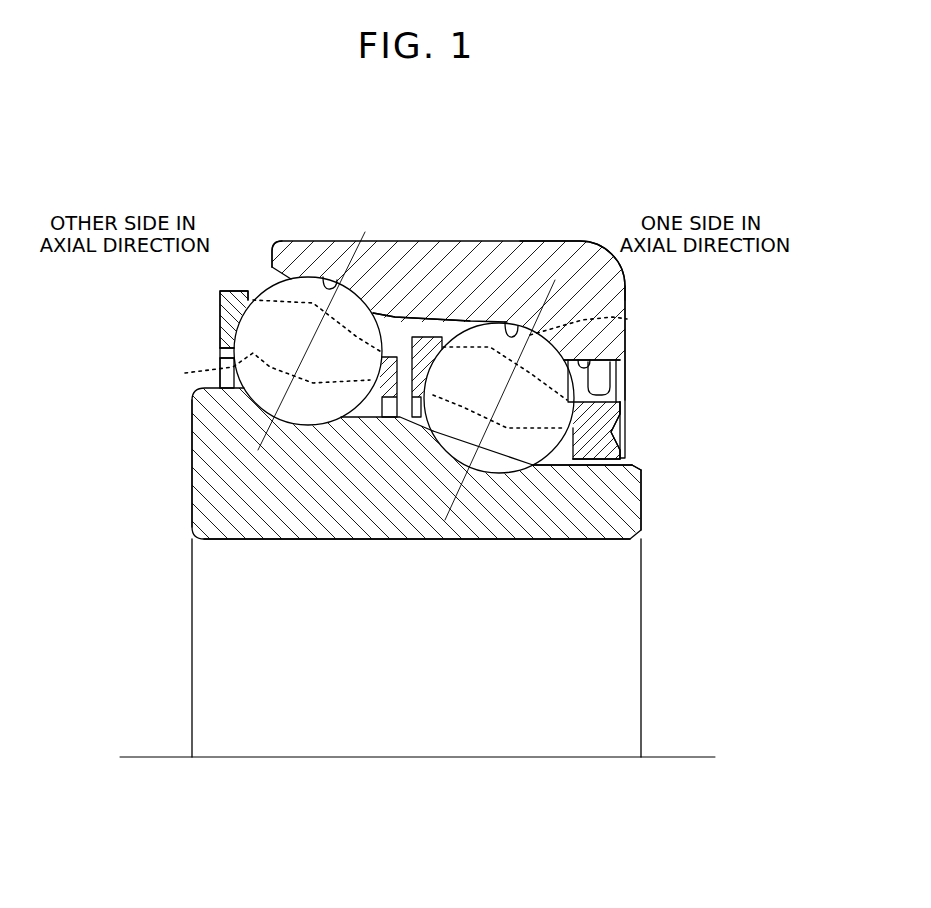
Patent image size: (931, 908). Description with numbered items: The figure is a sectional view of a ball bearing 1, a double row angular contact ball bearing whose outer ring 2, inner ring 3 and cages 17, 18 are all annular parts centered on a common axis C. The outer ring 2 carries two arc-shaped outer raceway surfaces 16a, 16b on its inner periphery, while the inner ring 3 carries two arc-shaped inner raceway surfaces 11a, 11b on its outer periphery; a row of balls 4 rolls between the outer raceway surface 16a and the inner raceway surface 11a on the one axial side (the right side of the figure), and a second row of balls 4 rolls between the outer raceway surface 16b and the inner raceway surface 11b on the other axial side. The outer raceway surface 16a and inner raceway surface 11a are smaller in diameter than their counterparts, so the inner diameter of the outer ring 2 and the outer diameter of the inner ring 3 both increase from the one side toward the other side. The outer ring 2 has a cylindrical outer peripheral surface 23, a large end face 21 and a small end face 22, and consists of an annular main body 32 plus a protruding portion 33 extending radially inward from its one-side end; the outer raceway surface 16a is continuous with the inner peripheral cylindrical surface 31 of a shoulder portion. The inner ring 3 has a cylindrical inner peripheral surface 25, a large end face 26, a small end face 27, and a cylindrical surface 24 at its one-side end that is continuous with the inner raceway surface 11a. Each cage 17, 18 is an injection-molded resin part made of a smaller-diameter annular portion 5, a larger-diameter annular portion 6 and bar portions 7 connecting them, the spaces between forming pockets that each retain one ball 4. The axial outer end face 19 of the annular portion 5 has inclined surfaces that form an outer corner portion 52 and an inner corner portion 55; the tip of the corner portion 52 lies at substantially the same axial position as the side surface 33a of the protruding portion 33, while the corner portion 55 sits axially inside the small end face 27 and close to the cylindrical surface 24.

The ball bearing 1 is at (541, 170).
The outer ring 2 is at (458, 238).
The inner ring 3 is at (535, 545).
The balls 4 is at (222, 362).
The annular portion with a smaller diameter 5 is at (620, 452).
The annular portion with a larger diameter 6 is at (428, 337).
The bar portions 7 is at (185, 373).
The inner raceway surface 11a is at (475, 473).
The inner raceway surface 11b is at (288, 428).
The outer raceway surface 16a is at (508, 322).
The outer raceway surface 16b is at (331, 277).
The cage 17 is at (597, 471).
The cage 18 is at (216, 296).
The axial outer end face 19 is at (622, 431).
The large end face 21 is at (627, 309).
The small end face 22 is at (272, 257).
The outer peripheral surface 23 is at (397, 318).
The cylindrical surface 24 is at (562, 467).
The inner peripheral surface 25 is at (322, 542).
The large end face 26 is at (192, 483).
The small end face 27 is at (642, 505).
The inner peripheral cylindrical surface 31 is at (603, 357).
The annular main body 32 is at (540, 262).
The protruding portion 33 is at (607, 391).
The side surface 33a is at (618, 375).
The corner portion 52 is at (621, 409).
The corner portion 55 is at (637, 462).
The axis C is at (148, 752).